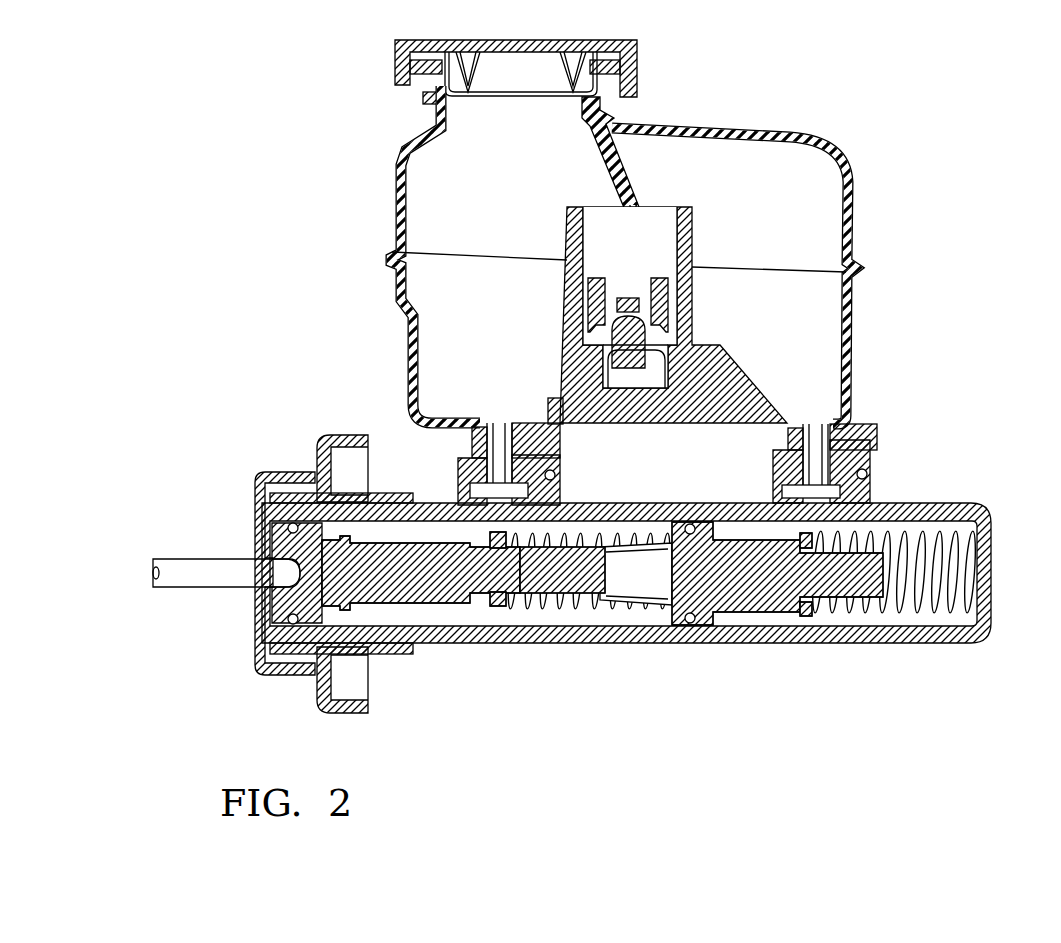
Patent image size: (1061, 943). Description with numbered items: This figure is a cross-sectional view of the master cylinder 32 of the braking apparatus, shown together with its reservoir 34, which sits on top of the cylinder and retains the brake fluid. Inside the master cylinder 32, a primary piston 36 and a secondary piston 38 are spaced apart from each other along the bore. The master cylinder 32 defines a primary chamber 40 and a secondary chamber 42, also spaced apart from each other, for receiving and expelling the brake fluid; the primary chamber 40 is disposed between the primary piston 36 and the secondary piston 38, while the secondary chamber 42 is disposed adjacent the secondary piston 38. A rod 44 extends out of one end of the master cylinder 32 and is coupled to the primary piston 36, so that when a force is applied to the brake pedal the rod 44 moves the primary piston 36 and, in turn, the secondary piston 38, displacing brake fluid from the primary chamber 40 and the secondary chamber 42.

The master cylinder 32 is at (945, 503).
The reservoir 34 is at (810, 130).
The primary piston 36 is at (430, 600).
The secondary piston 38 is at (760, 600).
The primary chamber 40 is at (573, 612).
The secondary chamber 42 is at (912, 612).
The rod 44 is at (205, 565).